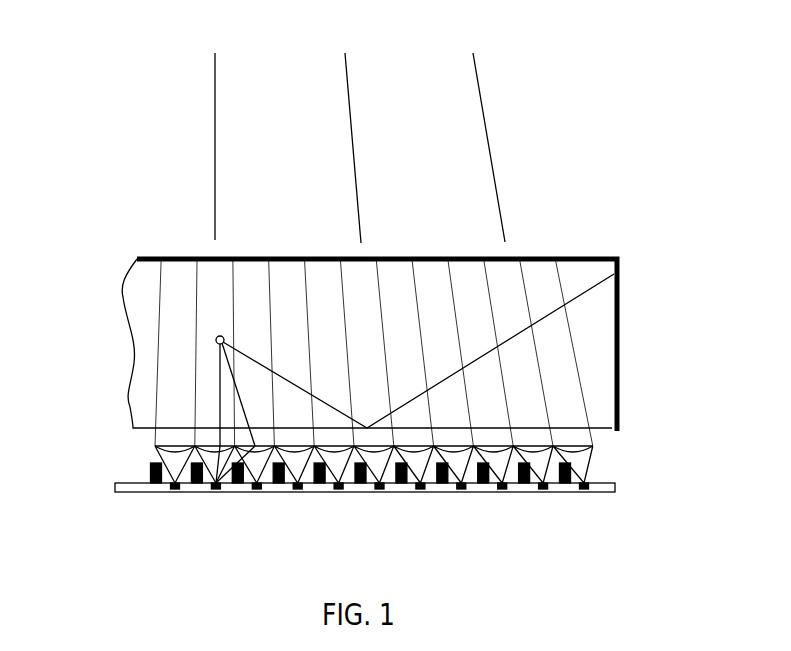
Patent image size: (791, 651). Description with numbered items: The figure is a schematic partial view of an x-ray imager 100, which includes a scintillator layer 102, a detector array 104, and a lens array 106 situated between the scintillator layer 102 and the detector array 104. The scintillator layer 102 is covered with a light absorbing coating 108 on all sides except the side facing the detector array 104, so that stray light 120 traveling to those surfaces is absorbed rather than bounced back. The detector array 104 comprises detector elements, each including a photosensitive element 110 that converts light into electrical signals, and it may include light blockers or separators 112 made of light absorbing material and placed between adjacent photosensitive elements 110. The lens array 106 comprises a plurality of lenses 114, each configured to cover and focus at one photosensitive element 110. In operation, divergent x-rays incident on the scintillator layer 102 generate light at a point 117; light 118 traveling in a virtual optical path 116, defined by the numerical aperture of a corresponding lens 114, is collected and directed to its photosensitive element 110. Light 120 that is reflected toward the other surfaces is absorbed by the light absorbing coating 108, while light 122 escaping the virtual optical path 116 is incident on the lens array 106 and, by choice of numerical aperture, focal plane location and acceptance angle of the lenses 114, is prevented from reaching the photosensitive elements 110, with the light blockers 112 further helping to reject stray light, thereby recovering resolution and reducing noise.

The x-ray imager 100 is at (645, 113).
The scintillator layer 102 is at (600, 333).
The detector array 104 is at (616, 488).
The lens array 106 is at (595, 446).
The light absorbing coating 108 is at (616, 291).
The photosensitive element 110 is at (217, 491).
The light blockers or separators 112 is at (275, 491).
The lens 114 is at (160, 447).
The virtual optical path 116 is at (219, 286).
The point 117 is at (224, 337).
The light 118 is at (219, 396).
The stray light 120 is at (426, 390).
The escaping light 122 is at (247, 416).